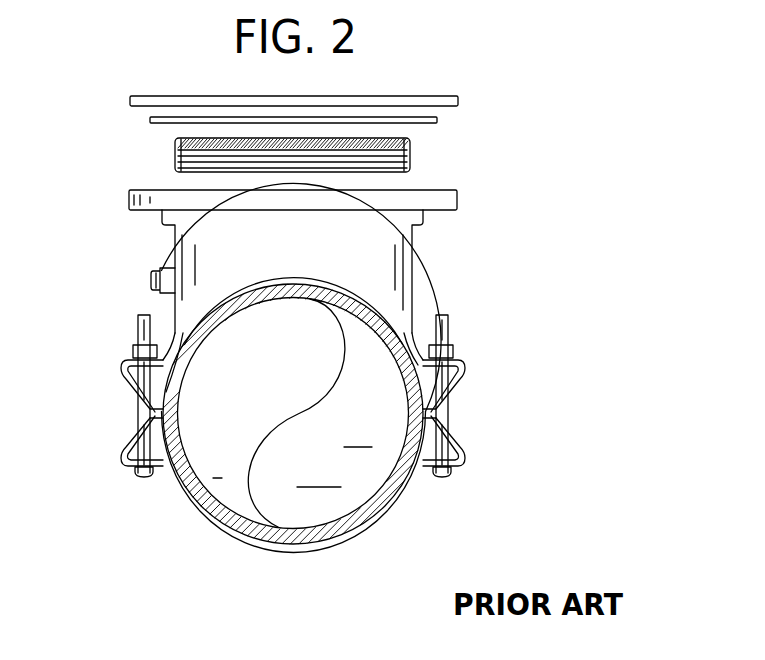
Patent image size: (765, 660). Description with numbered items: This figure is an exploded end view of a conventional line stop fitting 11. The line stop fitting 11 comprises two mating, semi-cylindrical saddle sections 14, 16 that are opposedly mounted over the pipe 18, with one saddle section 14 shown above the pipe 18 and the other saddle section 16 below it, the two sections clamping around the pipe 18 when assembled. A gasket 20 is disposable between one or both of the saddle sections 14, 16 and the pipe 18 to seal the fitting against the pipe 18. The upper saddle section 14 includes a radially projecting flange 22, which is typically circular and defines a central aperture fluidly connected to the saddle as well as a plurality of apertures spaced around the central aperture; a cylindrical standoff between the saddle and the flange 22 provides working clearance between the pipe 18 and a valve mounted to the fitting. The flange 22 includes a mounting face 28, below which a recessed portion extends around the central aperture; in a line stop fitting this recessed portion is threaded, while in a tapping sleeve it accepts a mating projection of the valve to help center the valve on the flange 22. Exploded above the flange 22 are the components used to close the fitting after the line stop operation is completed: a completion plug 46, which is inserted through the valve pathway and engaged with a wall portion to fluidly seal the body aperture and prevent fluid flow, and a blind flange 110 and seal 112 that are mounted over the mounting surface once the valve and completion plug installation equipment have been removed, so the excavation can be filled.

The blind flange 110 is at (450, 97).
The seal 112 is at (433, 126).
The completion plug 46 is at (411, 157).
The flange 22 is at (458, 200).
The mounting face 28 is at (146, 190).
The saddle section 14 is at (420, 343).
The saddle section 16 is at (423, 472).
The pipe 18 is at (188, 452).
The gasket 20 is at (337, 537).
The line stop fitting 11 is at (158, 523).